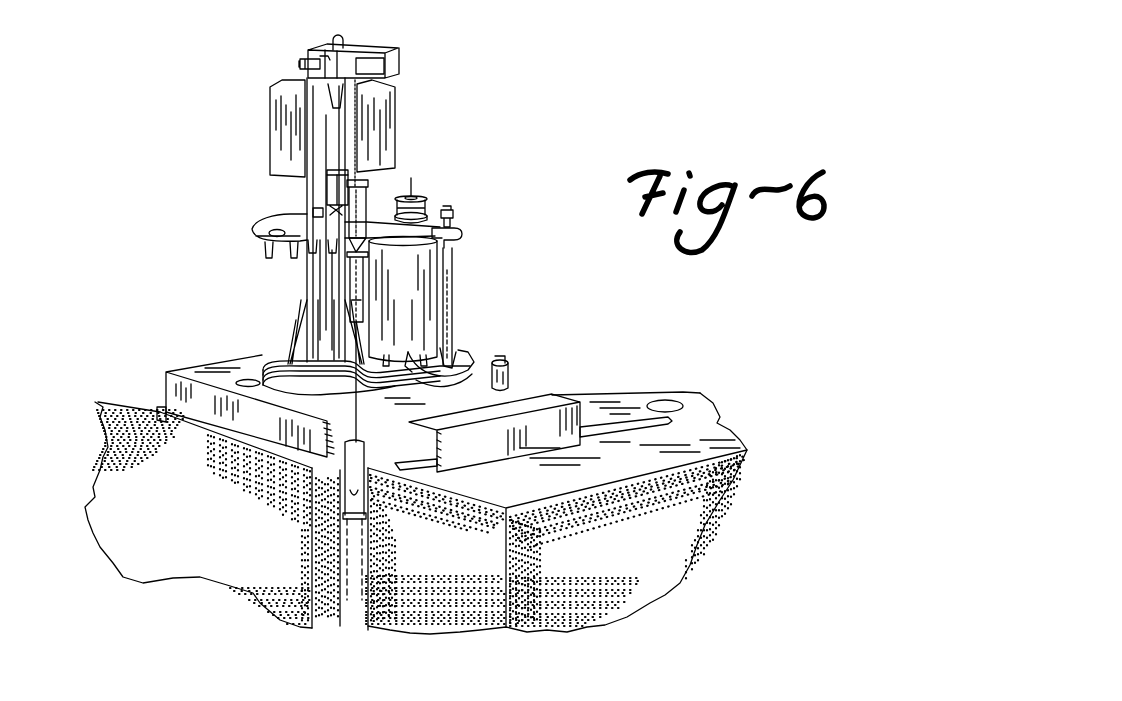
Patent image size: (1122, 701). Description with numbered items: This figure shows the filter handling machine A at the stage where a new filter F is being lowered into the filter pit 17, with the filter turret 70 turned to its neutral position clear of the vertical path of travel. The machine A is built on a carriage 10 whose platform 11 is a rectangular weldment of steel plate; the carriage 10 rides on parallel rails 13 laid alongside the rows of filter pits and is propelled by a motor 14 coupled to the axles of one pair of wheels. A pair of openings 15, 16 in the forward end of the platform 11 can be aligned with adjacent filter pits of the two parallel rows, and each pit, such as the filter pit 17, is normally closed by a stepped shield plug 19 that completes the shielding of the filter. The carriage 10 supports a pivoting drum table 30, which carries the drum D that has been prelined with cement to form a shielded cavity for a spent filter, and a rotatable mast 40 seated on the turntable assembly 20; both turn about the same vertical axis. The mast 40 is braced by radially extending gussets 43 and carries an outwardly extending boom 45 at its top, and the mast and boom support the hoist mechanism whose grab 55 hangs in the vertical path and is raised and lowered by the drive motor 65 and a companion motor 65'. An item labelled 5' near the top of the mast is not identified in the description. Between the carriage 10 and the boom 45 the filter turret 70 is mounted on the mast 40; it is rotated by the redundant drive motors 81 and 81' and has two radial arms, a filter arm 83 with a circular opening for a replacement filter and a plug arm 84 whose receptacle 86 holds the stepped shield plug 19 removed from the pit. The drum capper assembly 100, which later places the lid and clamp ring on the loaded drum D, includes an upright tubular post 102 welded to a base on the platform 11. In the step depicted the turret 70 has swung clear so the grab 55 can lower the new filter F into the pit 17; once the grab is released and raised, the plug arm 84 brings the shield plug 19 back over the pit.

The carriage 10 is at (208, 337).
The platform 11 is at (537, 400).
The rails 13 is at (145, 470).
The motor 14 is at (520, 358).
The opening 15 is at (393, 410).
The opening 16 is at (173, 370).
The filter pit 17 is at (368, 468).
The stepped shield plug 19 is at (414, 196).
The turntable assembly 20 is at (278, 402).
The drum table 30 is at (463, 367).
The mast 40 is at (305, 187).
The gussets 43 is at (296, 303).
The boom 45 is at (362, 52).
The grab 55 is at (367, 197).
The drive motor 65 is at (268, 68).
The upper fitting 65' is at (278, 36).
The filter turret 70 is at (273, 213).
The drive motor 81 is at (276, 194).
The drive motor 81' is at (280, 148).
The filter arm 83 is at (248, 226).
The plug arm 84 is at (445, 268).
The receptacle 86 is at (436, 222).
The drum capper assembly 100 is at (485, 226).
The post 102 is at (450, 298).
The clamp block plates 5' is at (358, 125).
The machine A is at (527, 123).
The drum D is at (423, 268).
The filter F is at (350, 276).